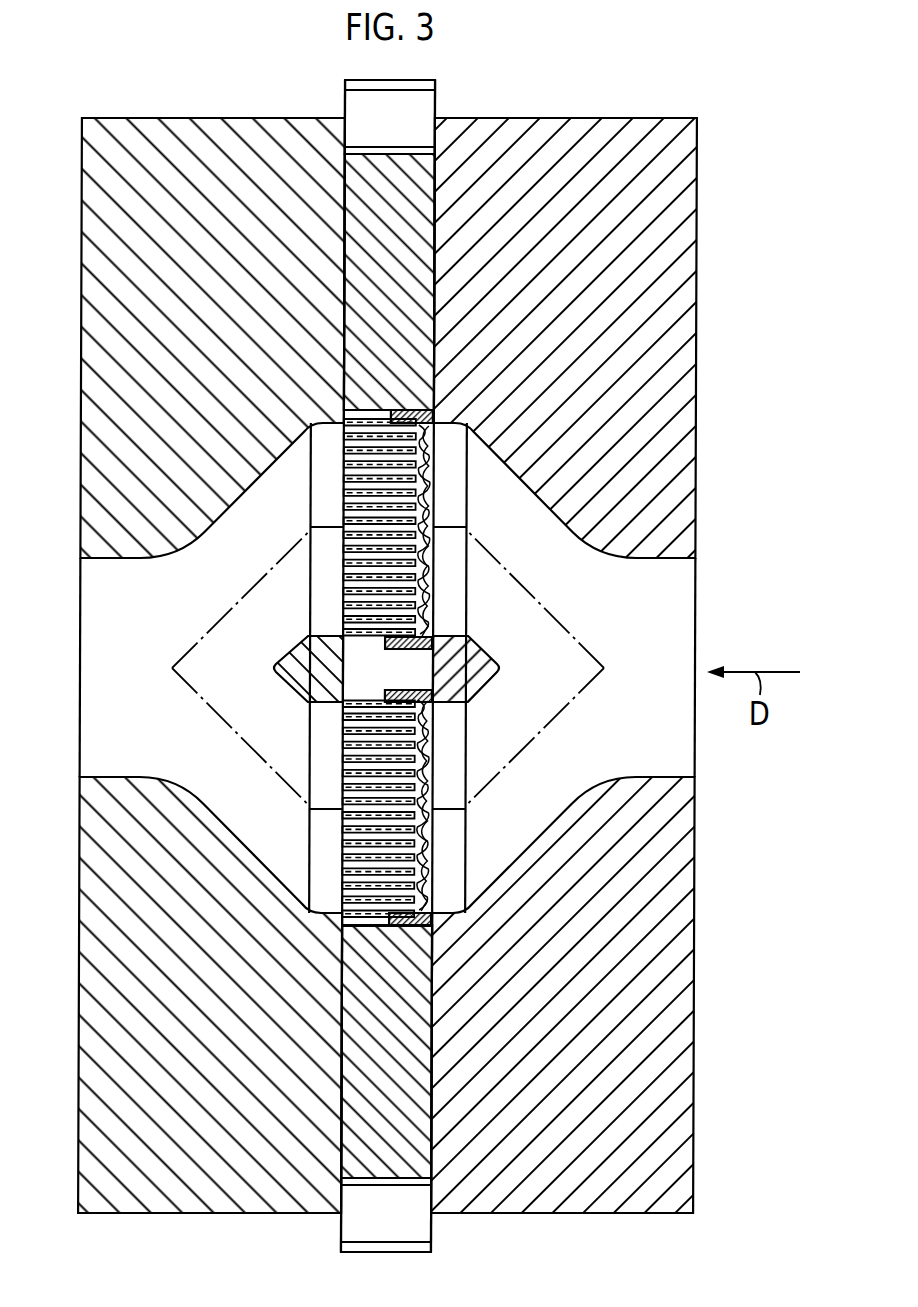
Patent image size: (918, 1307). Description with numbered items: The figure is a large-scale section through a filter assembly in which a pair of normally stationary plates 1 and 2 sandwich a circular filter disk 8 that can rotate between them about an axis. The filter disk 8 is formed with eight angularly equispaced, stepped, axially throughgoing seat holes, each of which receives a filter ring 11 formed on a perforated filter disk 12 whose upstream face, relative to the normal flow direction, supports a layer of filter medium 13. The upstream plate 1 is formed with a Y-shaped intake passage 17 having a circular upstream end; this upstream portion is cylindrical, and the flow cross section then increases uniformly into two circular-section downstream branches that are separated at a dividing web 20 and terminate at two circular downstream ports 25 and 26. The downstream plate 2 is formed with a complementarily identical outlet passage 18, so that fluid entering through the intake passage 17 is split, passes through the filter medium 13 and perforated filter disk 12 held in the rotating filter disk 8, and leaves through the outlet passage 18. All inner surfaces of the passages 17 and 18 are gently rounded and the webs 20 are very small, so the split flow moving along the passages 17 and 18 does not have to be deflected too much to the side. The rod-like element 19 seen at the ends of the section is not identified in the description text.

The upstream plate 1 is at (686, 173).
The downstream plate 2 is at (100, 200).
The circular filter disk 8 is at (356, 176).
The filter ring 11 is at (467, 442).
The perforated filter disk 12 is at (343, 487).
The filter medium 13 is at (427, 506).
The intake passage 17 is at (648, 675).
The outlet passage 18 is at (140, 681).
The rod end cap 19 is at (413, 108).
The dividing web 20 is at (472, 682).
The downstream port 25 is at (440, 752).
The downstream port 26 is at (435, 574).